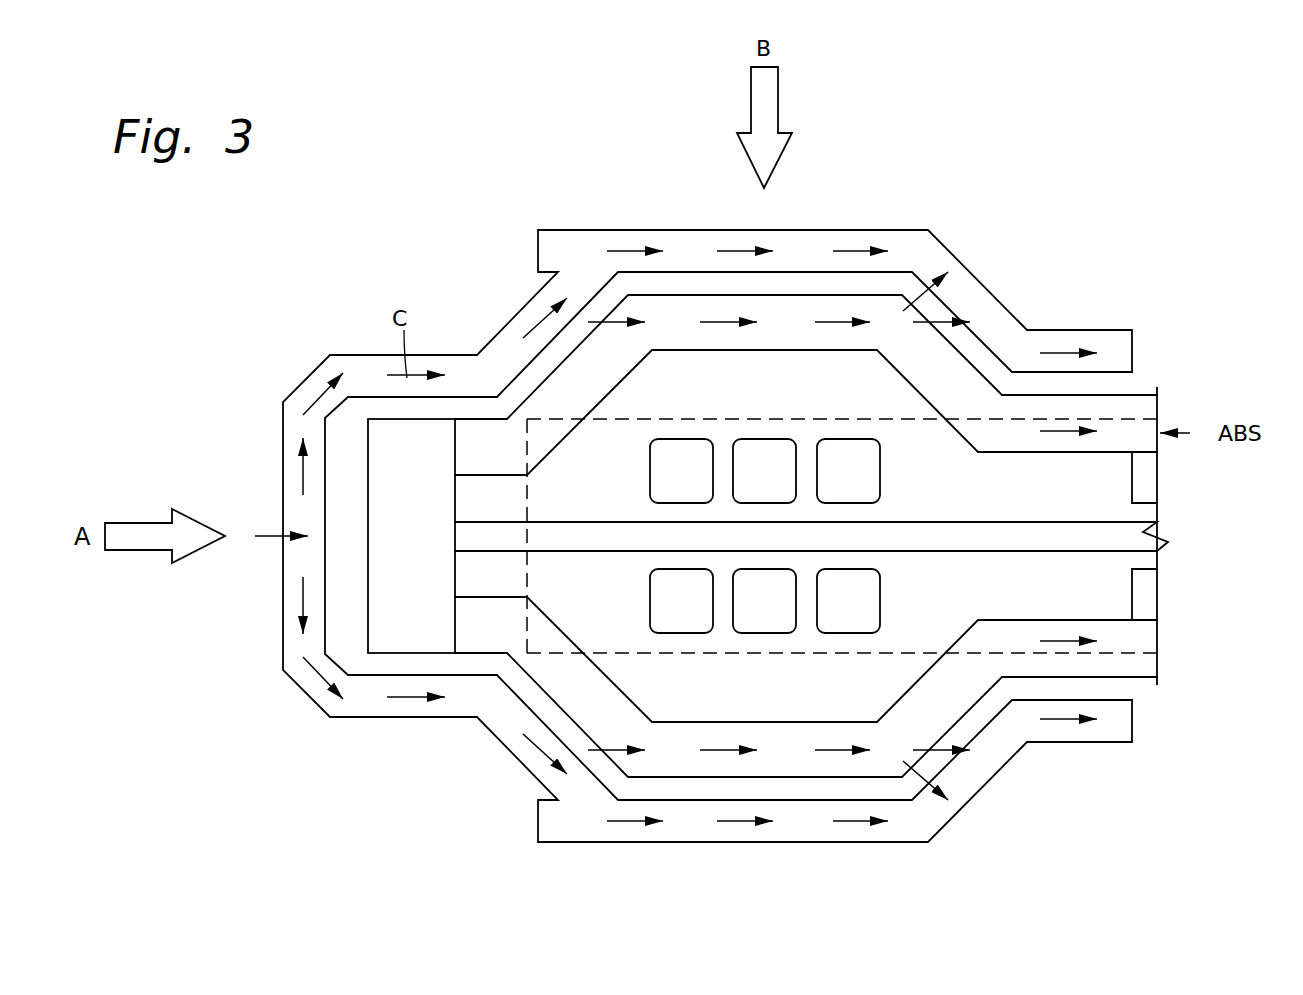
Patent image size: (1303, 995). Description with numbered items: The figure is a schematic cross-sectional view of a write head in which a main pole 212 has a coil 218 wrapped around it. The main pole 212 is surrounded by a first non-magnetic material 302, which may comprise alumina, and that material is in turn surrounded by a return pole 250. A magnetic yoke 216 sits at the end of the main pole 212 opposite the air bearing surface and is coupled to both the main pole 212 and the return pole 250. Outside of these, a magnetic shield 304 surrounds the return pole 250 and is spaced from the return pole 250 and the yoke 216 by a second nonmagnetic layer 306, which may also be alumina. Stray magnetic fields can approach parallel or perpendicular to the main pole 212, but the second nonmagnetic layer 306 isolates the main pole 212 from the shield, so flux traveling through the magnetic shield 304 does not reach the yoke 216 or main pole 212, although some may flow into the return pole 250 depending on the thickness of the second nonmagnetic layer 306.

The main pole 212 is at (912, 541).
The magnetic yoke 216 is at (433, 549).
The coil 218 is at (870, 467).
The return pole 250 is at (723, 335).
The first non-magnetic material 302 is at (783, 697).
The magnetic shield 304 is at (290, 426).
The second nonmagnetic layer 306 is at (345, 593).